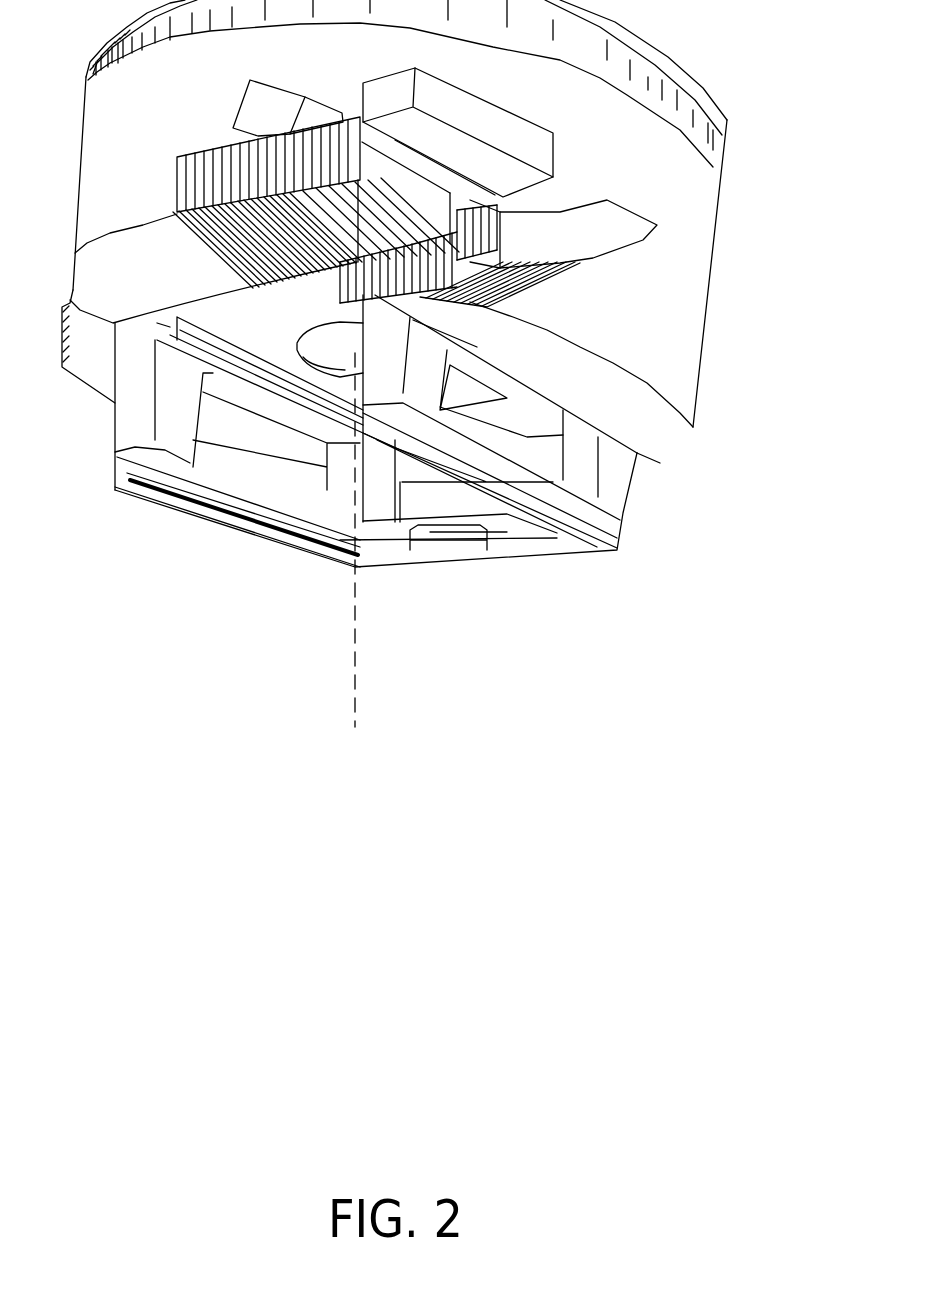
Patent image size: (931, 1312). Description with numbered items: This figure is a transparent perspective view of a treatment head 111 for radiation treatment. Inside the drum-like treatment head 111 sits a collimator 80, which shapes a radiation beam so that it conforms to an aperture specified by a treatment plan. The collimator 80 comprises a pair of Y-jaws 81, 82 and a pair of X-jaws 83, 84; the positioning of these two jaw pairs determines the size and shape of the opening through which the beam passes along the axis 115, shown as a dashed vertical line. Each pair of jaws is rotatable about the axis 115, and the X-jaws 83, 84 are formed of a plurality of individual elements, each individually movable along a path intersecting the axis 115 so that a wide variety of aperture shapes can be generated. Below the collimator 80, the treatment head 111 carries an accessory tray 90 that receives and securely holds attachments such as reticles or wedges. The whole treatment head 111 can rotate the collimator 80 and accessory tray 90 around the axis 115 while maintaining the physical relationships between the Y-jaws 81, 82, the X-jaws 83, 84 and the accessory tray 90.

The collimator 80 is at (609, 165).
The Y-jaw 81 is at (263, 80).
The Y-jaw 82 is at (482, 100).
The X-jaw 83 is at (207, 153).
The X-jaw 84 is at (590, 263).
The accessory tray 90 is at (623, 518).
The treatment head 111 is at (717, 233).
The axis 115 is at (370, 566).